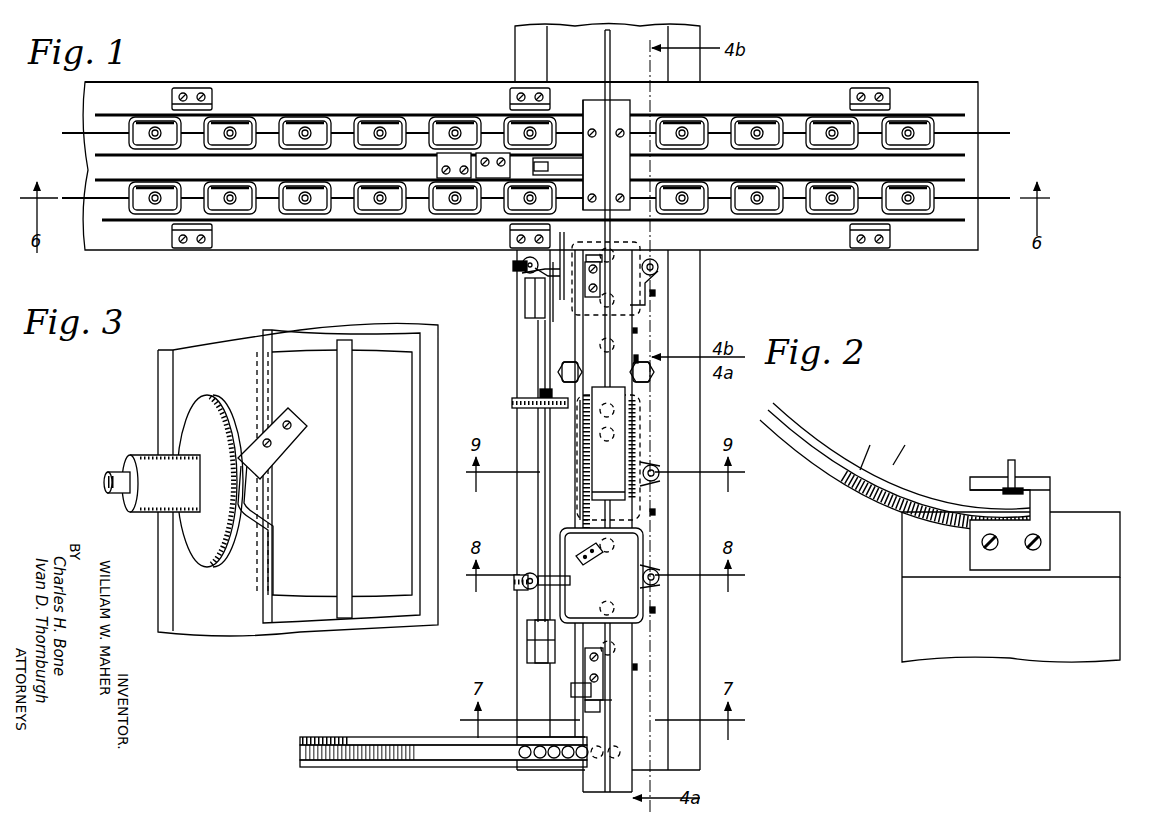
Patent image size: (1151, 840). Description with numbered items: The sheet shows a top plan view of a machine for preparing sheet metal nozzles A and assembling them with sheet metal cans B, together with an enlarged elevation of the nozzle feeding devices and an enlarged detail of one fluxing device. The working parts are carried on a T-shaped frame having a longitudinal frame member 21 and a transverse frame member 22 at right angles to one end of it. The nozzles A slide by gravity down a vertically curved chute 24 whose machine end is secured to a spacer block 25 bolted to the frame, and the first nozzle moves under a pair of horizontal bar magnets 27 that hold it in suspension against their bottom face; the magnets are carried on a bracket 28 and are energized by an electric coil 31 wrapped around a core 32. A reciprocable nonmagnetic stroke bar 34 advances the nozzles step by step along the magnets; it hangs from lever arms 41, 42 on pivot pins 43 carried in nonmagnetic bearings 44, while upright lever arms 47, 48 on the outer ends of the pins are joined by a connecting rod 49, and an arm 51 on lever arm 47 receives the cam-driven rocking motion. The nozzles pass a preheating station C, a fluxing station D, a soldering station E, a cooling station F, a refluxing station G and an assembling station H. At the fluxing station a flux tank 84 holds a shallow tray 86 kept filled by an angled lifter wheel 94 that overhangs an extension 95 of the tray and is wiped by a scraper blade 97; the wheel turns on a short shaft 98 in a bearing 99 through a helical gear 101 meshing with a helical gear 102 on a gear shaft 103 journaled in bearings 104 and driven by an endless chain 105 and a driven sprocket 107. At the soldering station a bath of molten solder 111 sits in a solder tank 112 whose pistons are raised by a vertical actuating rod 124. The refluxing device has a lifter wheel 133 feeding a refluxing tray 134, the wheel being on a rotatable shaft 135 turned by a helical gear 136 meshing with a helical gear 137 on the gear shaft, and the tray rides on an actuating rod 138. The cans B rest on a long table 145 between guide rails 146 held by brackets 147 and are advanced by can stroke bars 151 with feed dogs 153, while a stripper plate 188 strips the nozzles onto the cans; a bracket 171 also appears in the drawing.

In FIG. 1, the longitudinal frame member 21 is at (523, 37).
In FIG. 2, the longitudinal frame member 21 is at (915, 615).
In FIG. 1, the transverse frame member 22 is at (808, 240).
In FIG. 1, the vertically curved chute 24 is at (412, 754).
In FIG. 2, the vertically curved chute 24 is at (833, 468).
In FIG. 2, the spacer block 25 is at (910, 556).
In FIG. 1, the bar magnets 27 is at (613, 108).
In FIG. 3, the bar magnets 27 is at (342, 473).
In FIG. 2, the bar magnets 27 is at (975, 478).
In FIG. 1, the bracket 28 is at (638, 362).
In FIG. 1, the electric coil 31 is at (619, 409).
In FIG. 1, the core 32 is at (637, 430).
In FIG. 1, the stroke bar 34 is at (603, 40).
In FIG. 3, the stroke bar 34 is at (353, 470).
In FIG. 2, the stroke bar 34 is at (1011, 459).
In FIG. 1, the lever arm 41 is at (607, 521).
In FIG. 1, the lever arm 42 is at (607, 279).
In FIG. 1, the pivot pins 43 is at (572, 690).
In FIG. 1, the nonmagnetic bearings 44 is at (603, 258).
In FIG. 1, the upright lever arm 47 is at (588, 706).
In FIG. 1, the upright lever arm 48 is at (587, 258).
In FIG. 1, the connecting rod 49 is at (583, 486).
In FIG. 1, the arm 51 is at (588, 695).
In FIG. 1, the flux tank 84 is at (645, 552).
In FIG. 3, the flux tank 84 is at (212, 628).
In FIG. 3, the tray 86 is at (313, 622).
In FIG. 1, the lifter wheel 94 is at (566, 595).
In FIG. 3, the lifter wheel 94 is at (226, 556).
In FIG. 3, the extension 95 is at (262, 500).
In FIG. 3, the scraper blade 97 is at (280, 438).
In FIG. 1, the short shaft 98 is at (522, 585).
In FIG. 3, the short shaft 98 is at (118, 470).
In FIG. 3, the bearing 99 is at (145, 456).
In FIG. 1, the helical gear 101 is at (542, 588).
In FIG. 1, the helical gear 102 is at (517, 575).
In FIG. 1, the gear shaft 103 is at (537, 490).
In FIG. 1, the bearings 104 is at (526, 302).
In FIG. 1, the endless chain 105 is at (540, 393).
In FIG. 1, the driven sprocket 107 is at (514, 403).
In FIG. 1, the bath of molten solder 111 is at (590, 445).
In FIG. 1, the solder tank 112 is at (636, 448).
In FIG. 1, the vertical actuating rod 124 is at (660, 477).
In FIG. 1, the lifter wheel 133 is at (553, 304).
In FIG. 1, the refluxing tray 134 is at (640, 262).
In FIG. 1, the rotatable shaft 135 is at (532, 282).
In FIG. 1, the helical gear 136 is at (522, 264).
In FIG. 1, the helical gear 137 is at (516, 271).
In FIG. 1, the actuating rod 138 is at (659, 267).
In FIG. 1, the table 145 is at (303, 96).
In FIG. 1, the guide rails 146 is at (966, 116).
In FIG. 1, the brackets 147 is at (189, 90).
In FIG. 1, the can stroke bars 151 is at (996, 196).
In FIG. 1, the feed dogs 153 is at (130, 120).
In FIG. 1, the bracket 171 is at (647, 290).
In FIG. 1, the stripper plate 188 is at (602, 172).
In FIG. 1, the nozzles A is at (683, 126).
In FIG. 1, the cans B is at (152, 140).
In FIG. 1, the preheating station C is at (638, 667).
In FIG. 1, the fluxing station D is at (655, 610).
In FIG. 1, the soldering station E is at (655, 512).
In FIG. 1, the cooling station F is at (636, 332).
In FIG. 1, the refluxing station G is at (655, 293).
In FIG. 1, the assembling station H is at (593, 110).